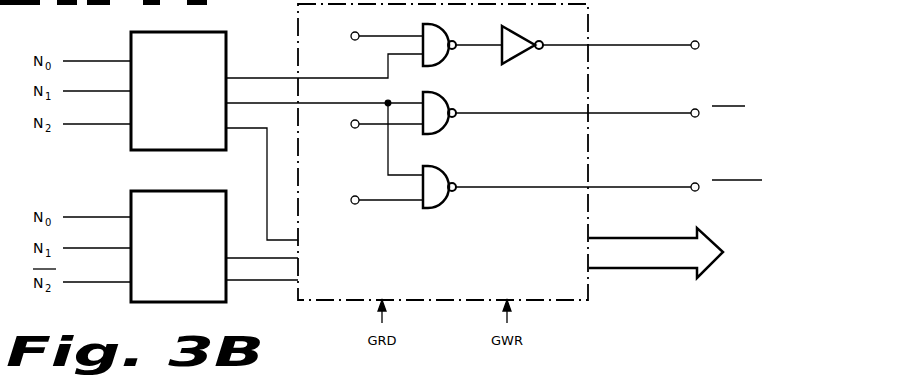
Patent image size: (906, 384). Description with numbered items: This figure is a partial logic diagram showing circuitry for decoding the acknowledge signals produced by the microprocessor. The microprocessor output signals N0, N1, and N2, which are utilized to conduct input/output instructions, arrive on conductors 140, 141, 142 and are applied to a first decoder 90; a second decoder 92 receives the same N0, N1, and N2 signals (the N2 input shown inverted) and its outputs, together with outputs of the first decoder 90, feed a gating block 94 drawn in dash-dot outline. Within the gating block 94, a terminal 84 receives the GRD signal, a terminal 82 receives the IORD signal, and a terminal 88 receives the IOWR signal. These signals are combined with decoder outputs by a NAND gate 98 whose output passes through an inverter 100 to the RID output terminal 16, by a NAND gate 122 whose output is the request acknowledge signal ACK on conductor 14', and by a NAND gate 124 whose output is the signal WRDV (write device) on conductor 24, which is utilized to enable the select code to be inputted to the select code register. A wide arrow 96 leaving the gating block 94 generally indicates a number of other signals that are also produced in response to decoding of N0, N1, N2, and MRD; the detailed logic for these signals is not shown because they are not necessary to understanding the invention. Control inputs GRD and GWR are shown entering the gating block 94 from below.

The conductor for output N0 140 is at (72, 61).
The conductor for output N1 141 is at (72, 91).
The conductor for output N2 142 is at (72, 124).
The first decoder 90 is at (188, 151).
The second decoder 92 is at (202, 303).
The gating logic block 94 is at (591, 18).
The GRD input terminal 84 is at (351, 37).
The IORD input terminal 82 is at (351, 125).
The IOWR input terminal 88 is at (351, 201).
The NAND gate 98 is at (443, 64).
The inverter 100 is at (522, 63).
The NAND gate 122 is at (443, 132).
The NAND gate 124 is at (443, 206).
The RID output terminal 16 is at (695, 41).
The conductor for request acknowledge signal ACK 14' is at (600, 100).
The conductor for write device signal WRDV 24 is at (696, 183).
The other signals 96 is at (652, 261).